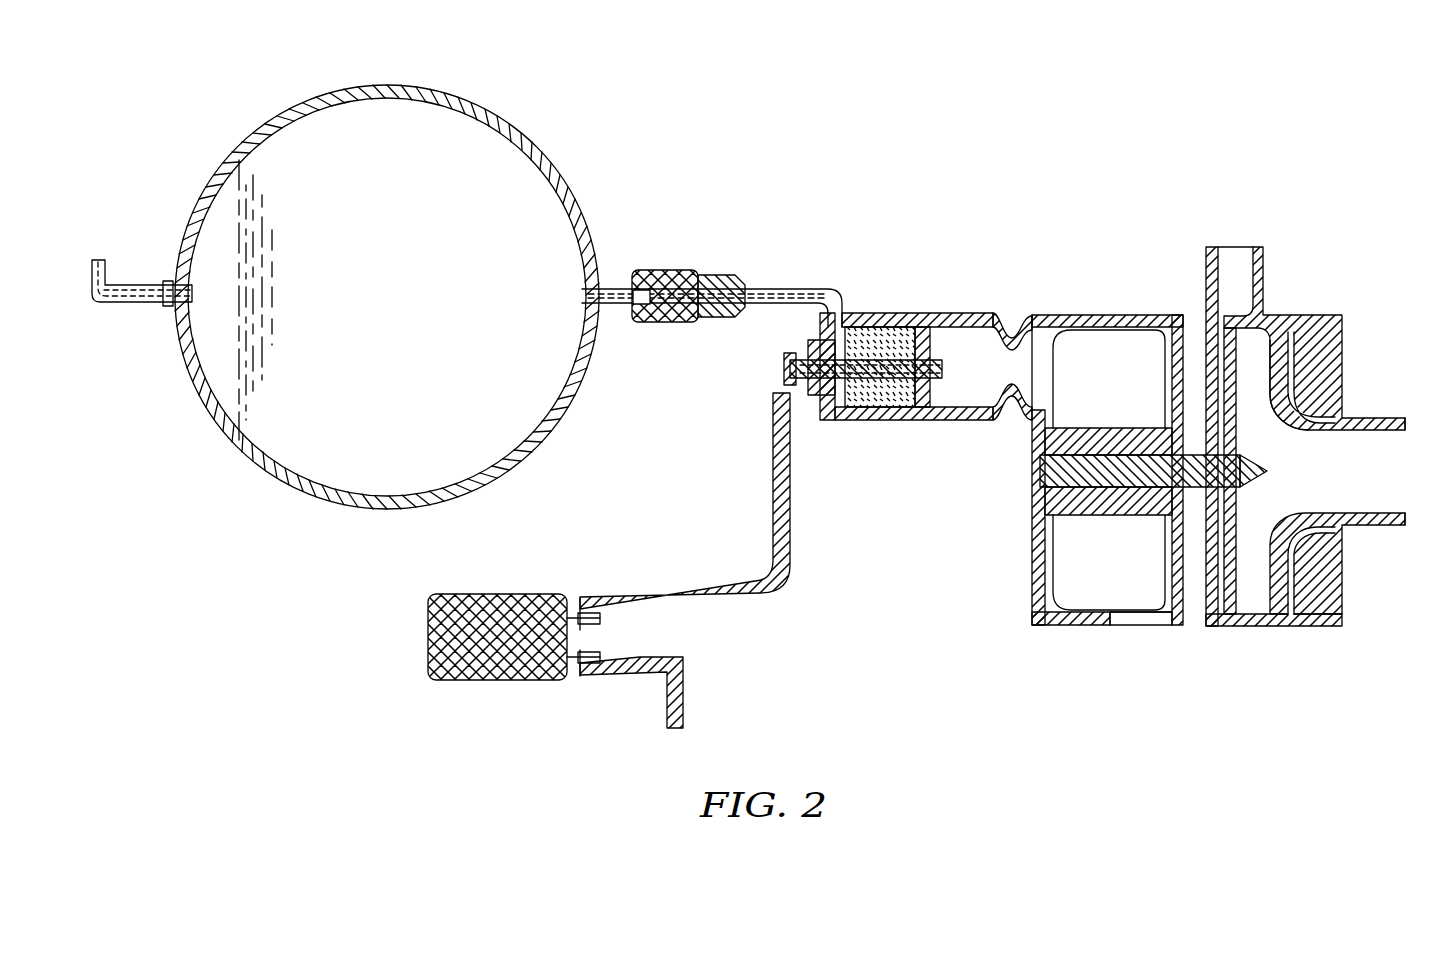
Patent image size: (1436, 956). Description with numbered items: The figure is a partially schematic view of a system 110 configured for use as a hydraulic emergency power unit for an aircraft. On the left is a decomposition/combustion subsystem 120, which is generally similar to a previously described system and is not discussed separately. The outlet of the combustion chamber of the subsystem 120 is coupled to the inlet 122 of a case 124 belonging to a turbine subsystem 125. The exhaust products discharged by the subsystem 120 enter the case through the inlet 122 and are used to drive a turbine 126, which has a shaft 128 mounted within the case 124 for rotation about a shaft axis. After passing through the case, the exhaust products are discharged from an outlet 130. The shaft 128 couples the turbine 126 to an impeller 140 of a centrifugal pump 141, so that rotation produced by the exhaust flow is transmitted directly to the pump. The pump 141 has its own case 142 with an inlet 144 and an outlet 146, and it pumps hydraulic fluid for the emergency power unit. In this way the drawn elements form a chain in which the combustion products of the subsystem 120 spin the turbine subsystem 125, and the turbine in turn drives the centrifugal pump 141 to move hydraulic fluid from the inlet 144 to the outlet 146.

The system 110 is at (940, 135).
The decomposition/combustion subsystem 120 is at (667, 192).
The inlet 122 is at (1043, 333).
The case 124 is at (1125, 318).
The turbine subsystem 125 is at (1012, 564).
The turbine 126 is at (1079, 588).
The shaft 128 is at (1043, 470).
The outlet 130 is at (1140, 620).
The impeller 140 is at (1288, 352).
The centrifugal pump 141 is at (1253, 642).
The case 142 is at (1333, 600).
The inlet 144 is at (1391, 492).
The outlet 146 is at (1234, 250).